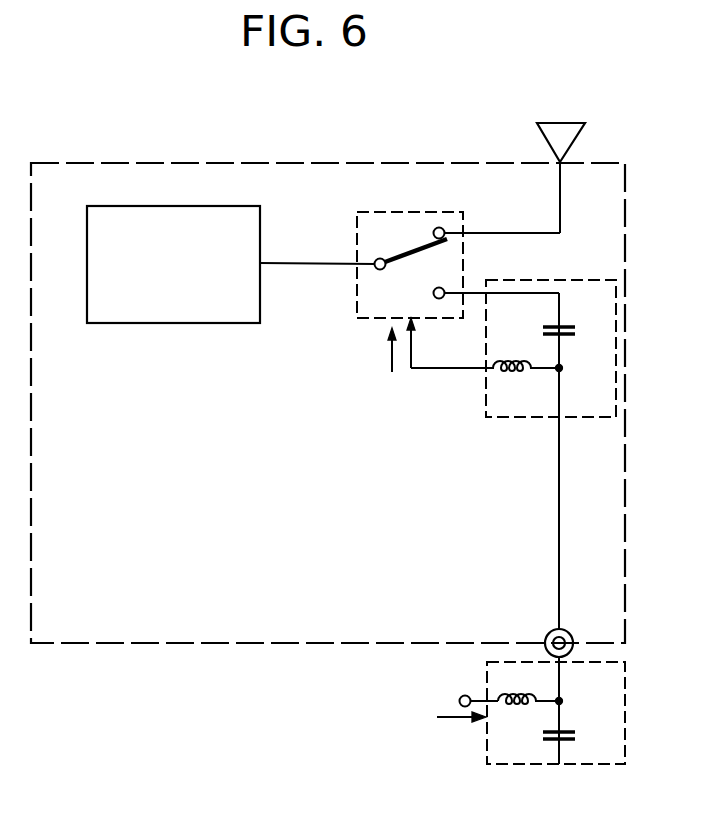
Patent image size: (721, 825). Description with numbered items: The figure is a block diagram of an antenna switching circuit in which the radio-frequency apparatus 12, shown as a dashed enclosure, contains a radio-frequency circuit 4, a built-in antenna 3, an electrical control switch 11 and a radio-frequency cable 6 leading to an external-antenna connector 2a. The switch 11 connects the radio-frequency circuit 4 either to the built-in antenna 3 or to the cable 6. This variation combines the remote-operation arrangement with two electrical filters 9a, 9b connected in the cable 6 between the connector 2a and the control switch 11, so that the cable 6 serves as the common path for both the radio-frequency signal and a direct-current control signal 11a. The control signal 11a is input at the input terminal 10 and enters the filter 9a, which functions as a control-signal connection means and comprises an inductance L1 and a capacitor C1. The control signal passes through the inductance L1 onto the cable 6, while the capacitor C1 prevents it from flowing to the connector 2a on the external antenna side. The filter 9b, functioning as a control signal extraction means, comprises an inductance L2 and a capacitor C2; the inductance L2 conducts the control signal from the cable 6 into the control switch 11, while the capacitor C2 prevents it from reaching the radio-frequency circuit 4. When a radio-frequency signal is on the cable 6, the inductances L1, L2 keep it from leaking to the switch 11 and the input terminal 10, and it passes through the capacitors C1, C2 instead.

The radio-frequency apparatus 12 is at (139, 163).
The radio-frequency circuit 4 is at (125, 317).
The electrical control switch 11 is at (356, 298).
The built-in antenna 3 is at (566, 127).
The radio-frequency cable 6 is at (559, 482).
The electrical filter 9b is at (616, 392).
The capacitor C2 is at (575, 330).
The inductance L2 is at (503, 374).
The control signal 11a is at (391, 362).
The external-antenna connector 2a is at (549, 630).
The electrical filter 9a is at (578, 764).
The input terminal 10 is at (464, 694).
The inductance L1 is at (518, 692).
The capacitor C1 is at (575, 735).